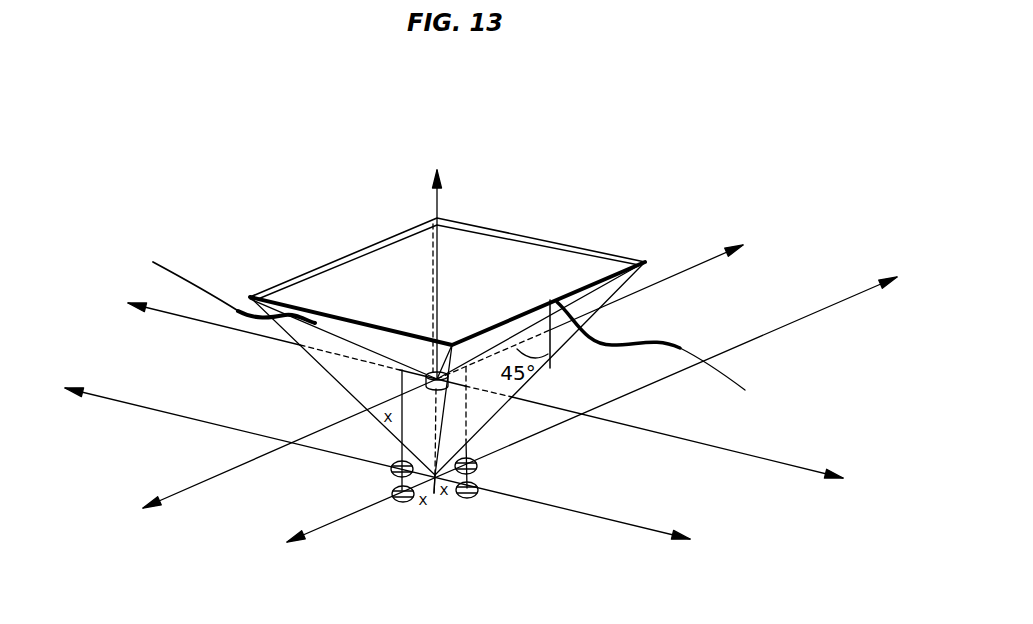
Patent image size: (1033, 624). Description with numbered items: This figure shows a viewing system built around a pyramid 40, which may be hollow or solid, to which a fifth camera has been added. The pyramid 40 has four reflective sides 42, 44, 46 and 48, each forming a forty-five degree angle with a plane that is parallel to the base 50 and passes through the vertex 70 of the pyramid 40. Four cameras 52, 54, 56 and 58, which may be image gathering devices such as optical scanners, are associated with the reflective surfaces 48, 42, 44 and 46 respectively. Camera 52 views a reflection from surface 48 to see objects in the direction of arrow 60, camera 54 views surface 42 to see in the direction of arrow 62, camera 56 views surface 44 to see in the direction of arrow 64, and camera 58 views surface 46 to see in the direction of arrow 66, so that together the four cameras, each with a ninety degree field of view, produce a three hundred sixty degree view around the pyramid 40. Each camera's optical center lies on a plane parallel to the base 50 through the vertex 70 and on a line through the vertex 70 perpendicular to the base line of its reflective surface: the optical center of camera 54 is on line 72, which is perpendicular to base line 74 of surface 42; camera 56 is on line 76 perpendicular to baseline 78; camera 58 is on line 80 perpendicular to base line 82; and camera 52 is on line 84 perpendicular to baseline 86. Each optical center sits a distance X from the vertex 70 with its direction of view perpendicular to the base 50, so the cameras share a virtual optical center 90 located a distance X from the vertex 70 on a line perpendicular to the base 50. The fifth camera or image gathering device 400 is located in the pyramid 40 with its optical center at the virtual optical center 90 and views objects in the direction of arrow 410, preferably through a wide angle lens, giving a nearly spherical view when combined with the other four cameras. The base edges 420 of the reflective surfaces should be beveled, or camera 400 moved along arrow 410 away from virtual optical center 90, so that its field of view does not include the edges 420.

The pyramid 40 is at (500, 230).
The reflective side 42 is at (318, 358).
The reflective side 44 is at (483, 407).
The reflective side 46 is at (567, 243).
The reflective side 48 is at (318, 266).
The base 50 is at (455, 243).
The camera 52 is at (393, 480).
The camera 54 is at (392, 517).
The camera 56 is at (480, 505).
The camera 58 is at (478, 478).
The arrow 60 is at (200, 322).
The arrow 62 is at (197, 485).
The arrow 64 is at (807, 466).
The arrow 66 is at (718, 258).
The vertex 70 is at (434, 495).
The line 72 is at (314, 528).
The base line 74 is at (363, 314).
The line 76 is at (631, 520).
The baseline 78 is at (664, 358).
The line 80 is at (765, 335).
The base line 82 is at (537, 237).
The line 84 is at (112, 397).
The baseline 86 is at (284, 283).
The virtual optical center 90 is at (220, 278).
The camera 400 is at (426, 383).
The arrow 410 is at (433, 200).
The base edges 420 is at (397, 237).